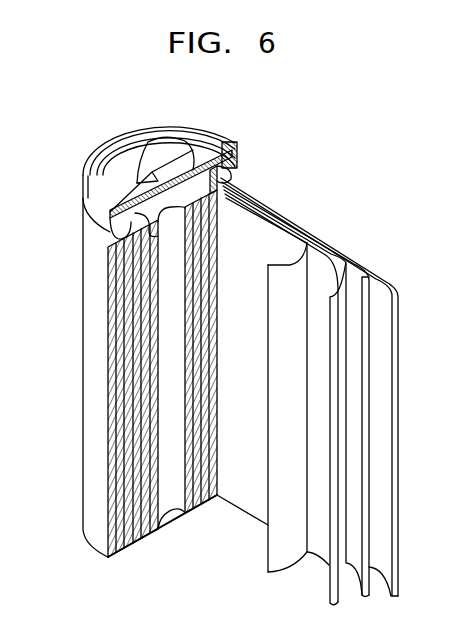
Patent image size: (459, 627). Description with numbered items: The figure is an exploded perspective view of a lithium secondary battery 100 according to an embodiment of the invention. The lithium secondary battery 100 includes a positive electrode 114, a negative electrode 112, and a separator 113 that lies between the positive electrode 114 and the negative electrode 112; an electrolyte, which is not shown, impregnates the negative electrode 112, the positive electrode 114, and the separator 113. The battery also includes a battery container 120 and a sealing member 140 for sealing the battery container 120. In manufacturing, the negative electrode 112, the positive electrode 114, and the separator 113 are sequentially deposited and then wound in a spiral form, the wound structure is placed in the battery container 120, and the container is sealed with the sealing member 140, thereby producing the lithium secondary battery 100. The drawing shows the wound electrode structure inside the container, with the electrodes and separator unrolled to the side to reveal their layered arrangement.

The lithium secondary battery 100 is at (322, 126).
The negative electrode 112 is at (388, 283).
The separator 113 is at (291, 262).
The positive electrode 114 is at (336, 290).
The battery container 120 is at (83, 368).
The sealing member 140 is at (155, 151).